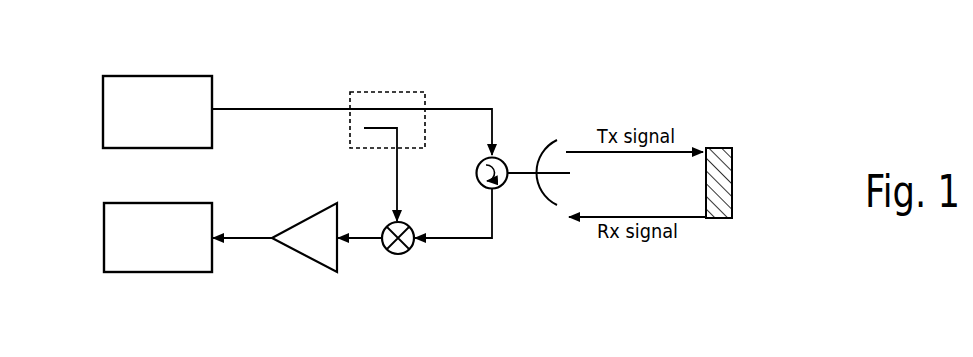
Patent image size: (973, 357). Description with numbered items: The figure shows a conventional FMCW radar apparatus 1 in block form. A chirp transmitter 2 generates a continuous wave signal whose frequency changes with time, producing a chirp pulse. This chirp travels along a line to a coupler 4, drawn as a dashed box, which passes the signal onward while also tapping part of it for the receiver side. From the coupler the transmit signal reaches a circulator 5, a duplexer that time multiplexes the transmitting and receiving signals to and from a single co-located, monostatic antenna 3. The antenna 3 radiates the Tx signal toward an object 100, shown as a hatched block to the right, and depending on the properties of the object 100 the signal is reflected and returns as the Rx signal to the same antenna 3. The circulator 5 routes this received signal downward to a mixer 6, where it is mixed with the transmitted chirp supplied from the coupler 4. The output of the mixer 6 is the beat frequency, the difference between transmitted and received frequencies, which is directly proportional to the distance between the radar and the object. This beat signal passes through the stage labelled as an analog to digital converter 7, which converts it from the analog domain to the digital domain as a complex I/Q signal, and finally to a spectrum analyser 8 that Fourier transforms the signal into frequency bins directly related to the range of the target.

The FMCW radar apparatus 1 is at (786, 91).
The chirp transmitter 2 is at (103, 92).
The co-located antenna 3 is at (566, 131).
The coupler 4 is at (410, 91).
The circulator 5 is at (508, 158).
The mixer 6 is at (398, 256).
The analog to digital converter 7 is at (302, 258).
The spectrum analyser 8 is at (104, 229).
The object 100 is at (704, 220).